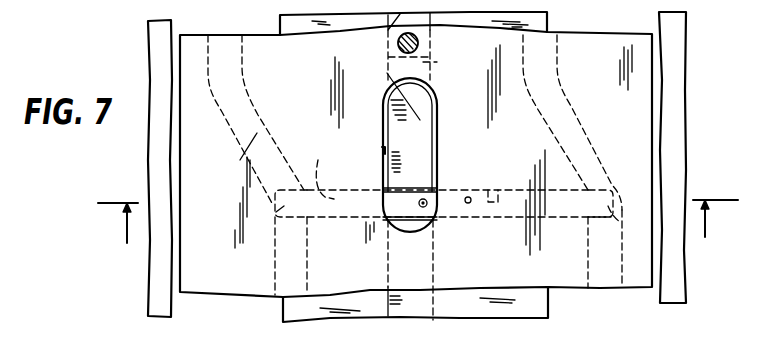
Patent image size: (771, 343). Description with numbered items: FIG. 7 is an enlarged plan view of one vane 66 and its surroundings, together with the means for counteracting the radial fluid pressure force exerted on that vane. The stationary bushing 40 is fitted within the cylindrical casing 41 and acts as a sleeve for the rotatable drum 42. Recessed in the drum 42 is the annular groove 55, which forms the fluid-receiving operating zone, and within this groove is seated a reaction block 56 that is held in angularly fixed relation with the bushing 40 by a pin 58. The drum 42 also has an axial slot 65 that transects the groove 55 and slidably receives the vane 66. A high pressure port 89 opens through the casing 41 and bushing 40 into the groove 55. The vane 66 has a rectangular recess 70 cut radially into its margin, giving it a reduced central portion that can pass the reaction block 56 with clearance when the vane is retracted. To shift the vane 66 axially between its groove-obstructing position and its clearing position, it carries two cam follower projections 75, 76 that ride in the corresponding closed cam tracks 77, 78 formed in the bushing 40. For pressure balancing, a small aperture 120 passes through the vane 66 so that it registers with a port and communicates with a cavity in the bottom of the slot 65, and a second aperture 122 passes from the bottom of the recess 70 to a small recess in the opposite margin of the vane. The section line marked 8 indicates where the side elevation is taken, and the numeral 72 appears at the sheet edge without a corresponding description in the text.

The cylindrical casing 41 is at (150, 66).
The stationary bushing 40 is at (416, 154).
The rotatable drum 42 is at (548, 308).
The pin 58 is at (418, 46).
The reaction block 56 is at (437, 63).
The annular groove 55 is at (413, 143).
The vane 66 is at (400, 205).
The aperture 120 is at (423, 208).
The second aperture 122 is at (468, 196).
The rectangular recess 70 is at (488, 190).
The axial slot 65 is at (318, 167).
The high pressure port 89 is at (383, 150).
The cam track 77 is at (240, 160).
The cam track 78 is at (583, 137).
The cam follower projection 75 is at (273, 217).
The cam follower projection 76 is at (611, 218).
The member 72 is at (671, 337).
The section line 8- 8 is at (418, 224).